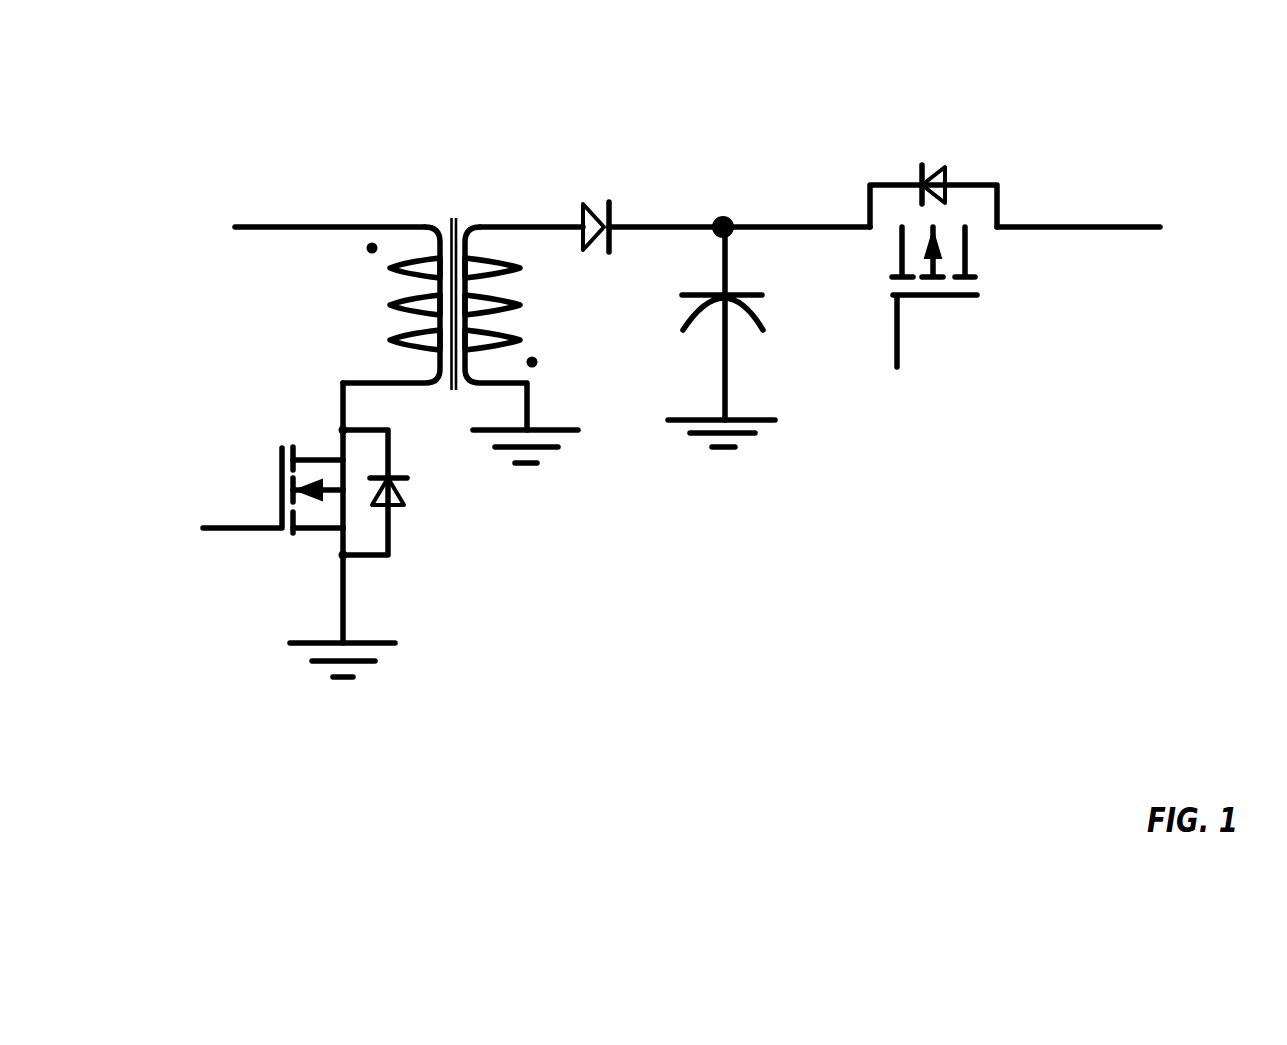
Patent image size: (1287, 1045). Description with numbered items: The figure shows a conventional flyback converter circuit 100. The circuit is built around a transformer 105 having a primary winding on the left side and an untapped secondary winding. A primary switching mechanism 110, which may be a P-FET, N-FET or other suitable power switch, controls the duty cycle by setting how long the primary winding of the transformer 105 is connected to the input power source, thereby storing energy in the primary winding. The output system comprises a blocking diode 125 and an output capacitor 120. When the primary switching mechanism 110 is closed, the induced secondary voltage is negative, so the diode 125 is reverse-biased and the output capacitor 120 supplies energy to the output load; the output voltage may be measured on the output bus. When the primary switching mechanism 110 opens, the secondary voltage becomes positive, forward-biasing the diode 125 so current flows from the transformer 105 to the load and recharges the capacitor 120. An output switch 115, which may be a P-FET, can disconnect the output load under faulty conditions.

The flyback converter circuit 100 is at (217, 84).
The transformer 105 is at (448, 177).
The primary switching mechanism Q0 110 is at (211, 428).
The switch Q9 115 is at (979, 381).
The output capacitor 120 is at (695, 354).
The blocking diode 125 is at (600, 176).